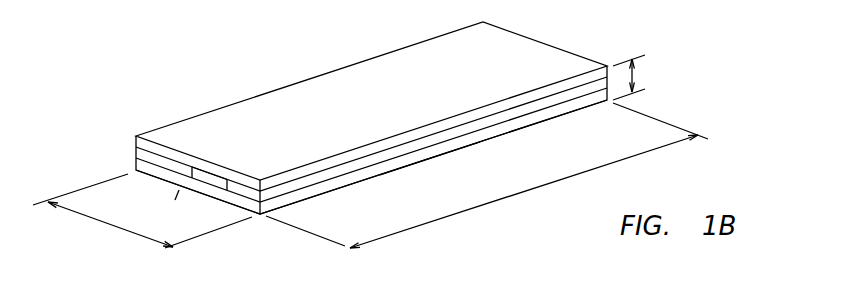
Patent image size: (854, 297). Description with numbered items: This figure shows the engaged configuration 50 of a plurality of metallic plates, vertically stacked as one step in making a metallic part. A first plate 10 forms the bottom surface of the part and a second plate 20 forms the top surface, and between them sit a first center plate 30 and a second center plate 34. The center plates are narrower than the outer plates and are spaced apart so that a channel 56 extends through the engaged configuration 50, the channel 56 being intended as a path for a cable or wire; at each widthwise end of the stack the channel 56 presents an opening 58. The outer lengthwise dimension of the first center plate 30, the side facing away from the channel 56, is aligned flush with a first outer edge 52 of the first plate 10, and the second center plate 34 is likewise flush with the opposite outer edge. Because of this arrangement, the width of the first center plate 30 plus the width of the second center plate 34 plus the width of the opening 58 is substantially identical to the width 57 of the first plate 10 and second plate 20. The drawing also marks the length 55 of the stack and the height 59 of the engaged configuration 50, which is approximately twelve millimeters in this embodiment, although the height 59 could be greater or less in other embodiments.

The engaged configuration 50 is at (222, 82).
The second plate 20 is at (134, 137).
The second center plate 34 is at (135, 152).
The first plate 10 is at (135, 167).
The first center plate 30 is at (242, 192).
The opening 58 is at (217, 182).
The channel 56 is at (182, 184).
The first outer edge 52 is at (506, 141).
The width 57 is at (110, 225).
The length dimension 55 is at (522, 192).
The height 59 is at (634, 76).